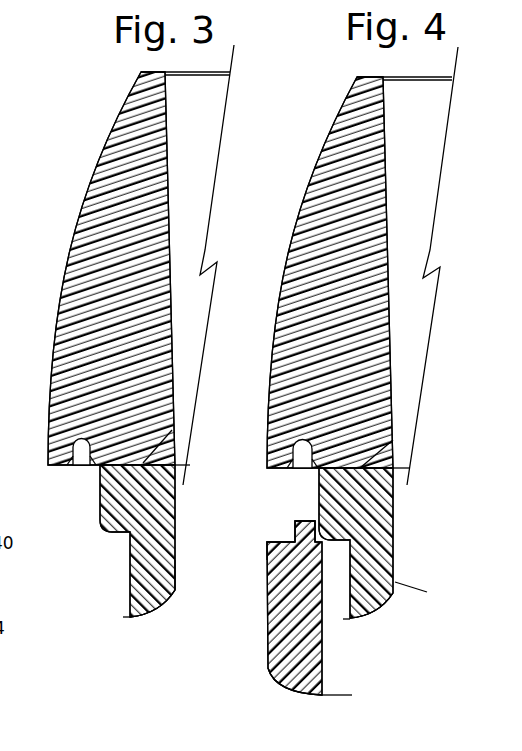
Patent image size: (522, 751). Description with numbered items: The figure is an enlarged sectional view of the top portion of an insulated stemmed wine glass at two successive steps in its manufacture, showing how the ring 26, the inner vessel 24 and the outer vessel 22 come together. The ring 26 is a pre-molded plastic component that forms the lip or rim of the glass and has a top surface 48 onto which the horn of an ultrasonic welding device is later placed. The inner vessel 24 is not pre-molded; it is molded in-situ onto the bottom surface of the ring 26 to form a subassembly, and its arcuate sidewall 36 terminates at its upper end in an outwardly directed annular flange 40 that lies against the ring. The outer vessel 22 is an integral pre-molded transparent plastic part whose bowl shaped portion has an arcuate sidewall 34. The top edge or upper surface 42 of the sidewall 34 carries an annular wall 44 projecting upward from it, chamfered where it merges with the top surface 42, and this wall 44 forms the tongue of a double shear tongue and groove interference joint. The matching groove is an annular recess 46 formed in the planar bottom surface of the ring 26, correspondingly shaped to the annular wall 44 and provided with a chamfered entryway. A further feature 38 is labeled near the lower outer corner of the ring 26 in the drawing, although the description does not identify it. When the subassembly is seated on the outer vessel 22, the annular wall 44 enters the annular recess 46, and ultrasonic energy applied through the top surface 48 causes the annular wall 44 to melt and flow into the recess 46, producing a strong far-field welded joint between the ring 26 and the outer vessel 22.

In FIG. 4, the outer vessel 22 is at (275, 617).
In FIG. 3, the inner vessel 24 is at (127, 592).
In FIG. 4, the inner vessel 24 is at (377, 613).
In FIG. 3, the ring 26 is at (102, 140).
In FIG. 4, the ring 26 is at (318, 145).
In FIG. 4, the sidewall 34 is at (268, 668).
In FIG. 3, the sidewall 36 is at (160, 578).
In FIG. 3, the chamfer 38 is at (172, 430).
In FIG. 4, the chamfer 38 is at (393, 440).
In FIG. 3, the annular flange 40 is at (115, 507).
In FIG. 4, the annular flange 40 is at (365, 520).
In FIG. 4, the top surface 42 is at (283, 541).
In FIG. 4, the annular wall 44 is at (308, 520).
In FIG. 3, the annular recess 46 is at (83, 453).
In FIG. 4, the annular recess 46 is at (302, 457).
In FIG. 3, the top surface 48 is at (141, 72).
In FIG. 4, the top surface 48 is at (400, 77).